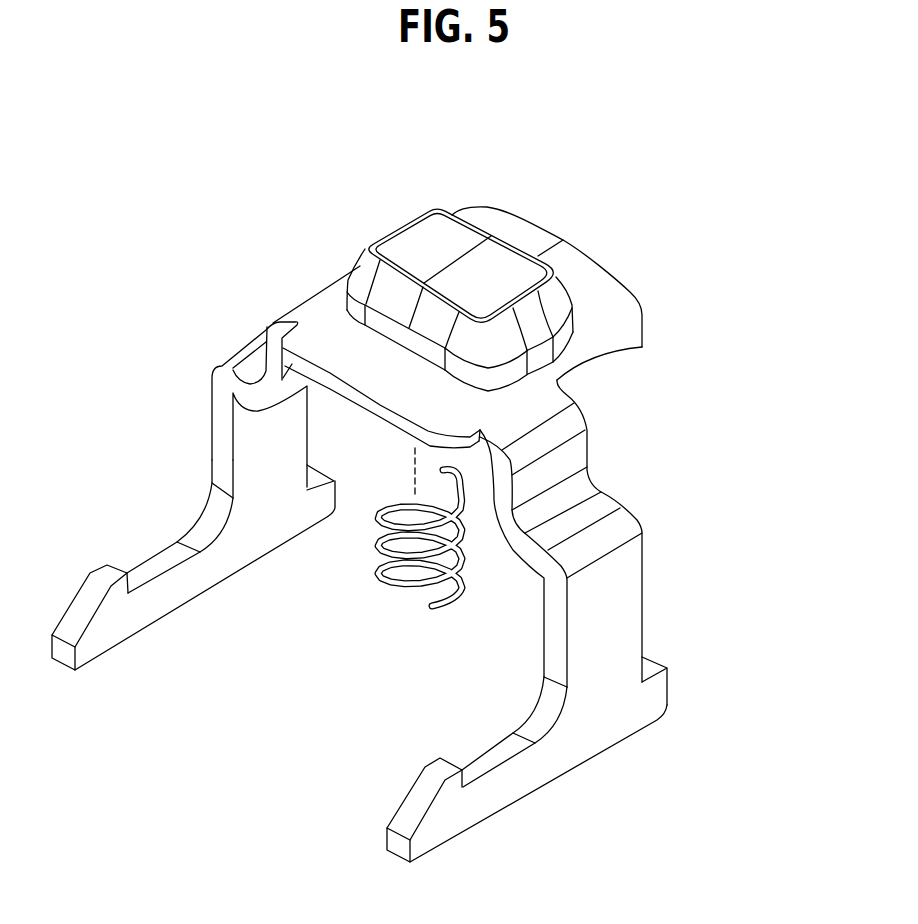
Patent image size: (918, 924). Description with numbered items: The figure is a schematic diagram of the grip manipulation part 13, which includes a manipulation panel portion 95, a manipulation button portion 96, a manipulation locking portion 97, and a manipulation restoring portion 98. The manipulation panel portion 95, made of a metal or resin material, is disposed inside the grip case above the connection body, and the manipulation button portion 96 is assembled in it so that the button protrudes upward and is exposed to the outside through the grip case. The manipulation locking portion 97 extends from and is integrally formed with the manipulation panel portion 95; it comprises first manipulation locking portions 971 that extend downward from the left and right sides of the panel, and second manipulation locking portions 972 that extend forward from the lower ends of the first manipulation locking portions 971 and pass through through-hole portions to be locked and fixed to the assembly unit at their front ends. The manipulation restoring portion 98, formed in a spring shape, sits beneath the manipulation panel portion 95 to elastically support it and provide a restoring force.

The grip manipulation part 13 is at (719, 111).
The manipulation panel portion 95 is at (607, 282).
The manipulation button portion 96 is at (437, 225).
The manipulation locking portion 97 is at (451, 592).
The first manipulation locking portion 971 is at (625, 614).
The second manipulation locking portion 972 is at (490, 818).
The manipulation restoring portion 98 is at (386, 576).